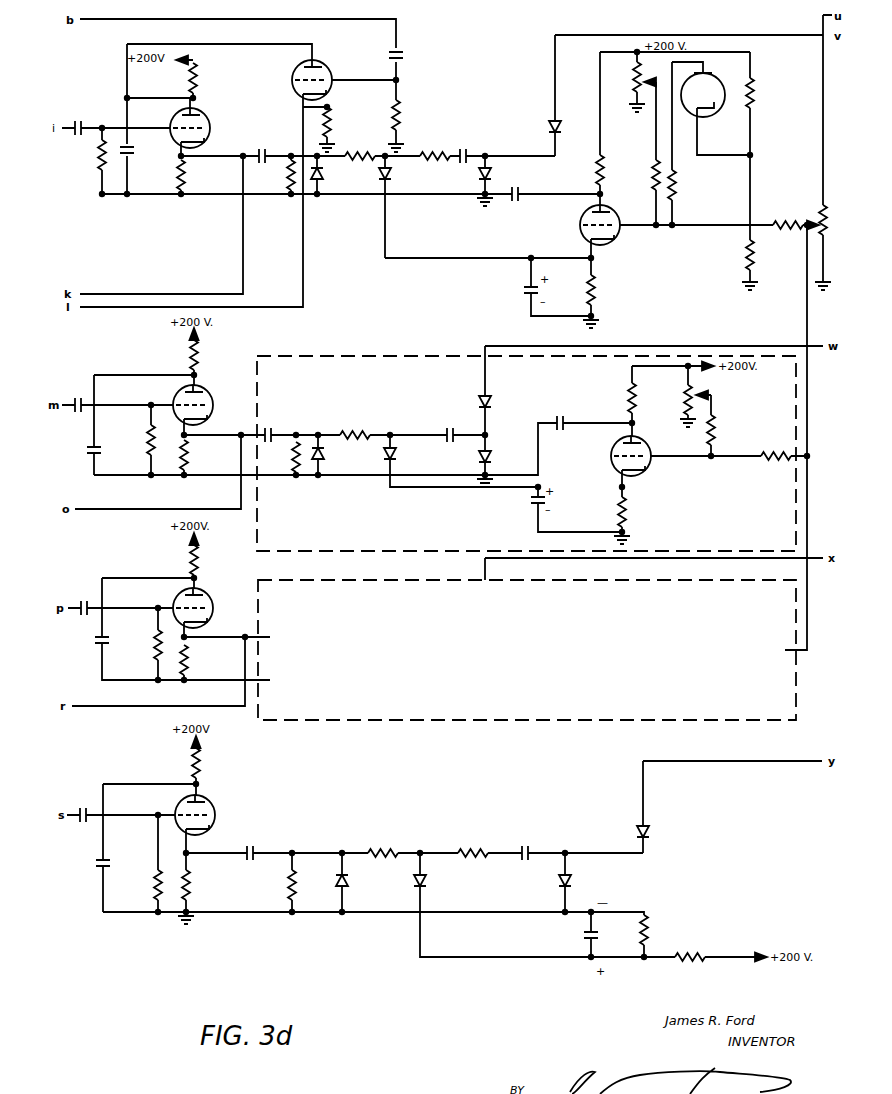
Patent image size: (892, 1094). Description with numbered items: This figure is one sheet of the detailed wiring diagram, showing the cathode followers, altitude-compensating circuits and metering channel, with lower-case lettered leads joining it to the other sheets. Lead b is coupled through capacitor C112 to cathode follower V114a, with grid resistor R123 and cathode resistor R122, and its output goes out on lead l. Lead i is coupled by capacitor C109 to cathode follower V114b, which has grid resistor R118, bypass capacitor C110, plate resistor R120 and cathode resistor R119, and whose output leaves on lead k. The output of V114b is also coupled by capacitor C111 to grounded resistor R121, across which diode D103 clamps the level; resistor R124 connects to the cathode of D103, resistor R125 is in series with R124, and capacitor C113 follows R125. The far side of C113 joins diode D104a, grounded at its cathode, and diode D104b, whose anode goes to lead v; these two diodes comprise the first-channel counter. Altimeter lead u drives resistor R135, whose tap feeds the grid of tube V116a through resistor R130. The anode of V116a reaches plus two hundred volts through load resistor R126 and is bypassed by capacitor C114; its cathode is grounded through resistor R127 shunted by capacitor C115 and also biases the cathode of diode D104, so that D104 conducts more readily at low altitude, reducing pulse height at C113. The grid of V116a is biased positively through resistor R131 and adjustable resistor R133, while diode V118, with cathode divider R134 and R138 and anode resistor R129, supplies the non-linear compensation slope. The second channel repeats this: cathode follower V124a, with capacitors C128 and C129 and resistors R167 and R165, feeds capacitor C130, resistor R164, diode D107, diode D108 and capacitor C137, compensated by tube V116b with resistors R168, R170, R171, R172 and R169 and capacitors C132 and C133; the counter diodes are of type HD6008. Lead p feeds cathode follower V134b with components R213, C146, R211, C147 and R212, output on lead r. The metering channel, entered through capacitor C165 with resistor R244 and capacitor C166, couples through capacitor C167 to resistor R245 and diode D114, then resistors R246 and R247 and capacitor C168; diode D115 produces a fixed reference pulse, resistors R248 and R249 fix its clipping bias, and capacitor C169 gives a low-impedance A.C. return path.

The coupling capacitor C109 is at (74, 116).
The grid resistor R118 is at (82, 158).
The bypass capacitor C110 is at (141, 155).
The plate resistor R120 is at (210, 78).
The cathode follower V114b is at (215, 128).
The cathode resistor R119 is at (199, 175).
The coupling capacitor C111 is at (267, 147).
The resistor R121 is at (271, 175).
The clamping diode D103 is at (331, 177).
The cathode follower V114a is at (328, 73).
The cathode resistor R122 is at (343, 116).
The coupling capacitor C112 is at (411, 52).
The grid resistor R123 is at (419, 112).
The resistor R124 is at (360, 154).
The resistor R125 is at (434, 154).
The capacitor C113 is at (466, 154).
The diode D104 is at (401, 177).
The diode D104a is at (510, 171).
The diode D104b is at (529, 124).
The bypass capacitor C114 is at (517, 208).
The capacitor C115 is at (511, 293).
The load resistor R126 is at (582, 170).
The resistor R131 is at (637, 172).
The adjustable resistor R133 is at (622, 85).
The diode V118 is at (713, 110).
The voltage divider resistor R138 is at (767, 93).
The resistor R129 is at (693, 185).
The resistor R135 is at (807, 211).
The resistor R130 is at (784, 240).
The voltage divider resistor R134 is at (732, 254).
The tube V116a is at (622, 235).
The cathode resistor R127 is at (610, 292).
The coupling capacitor C128 is at (74, 390).
The cathode follower V124a is at (173, 386).
The resistor R167 is at (238, 428).
The bypass capacitor C129 is at (80, 443).
The cathode resistor R165 is at (201, 455).
The coupling capacitor C130 is at (276, 421).
The resistor R164 is at (277, 457).
The clamping diode D107 is at (334, 454).
The diode D108 is at (406, 456).
The capacitor C137 is at (449, 421).
The diode HD6008 is at (591, 637).
The bypass capacitor C132 is at (560, 422).
The load resistor R168 is at (613, 397).
The adjustable resistor R170 is at (668, 402).
The resistor R171 is at (736, 426).
The tube V116b is at (603, 460).
The resistor R172 is at (770, 473).
The capacitor C133 is at (558, 510).
The cathode resistor R169 is at (640, 512).
The plate resistor R213 is at (174, 560).
The coupling capacitor C146 is at (77, 596).
The cathode follower V134b is at (158, 608).
The grid resistor R211 is at (140, 645).
The bypass capacitor C147 is at (87, 654).
The cathode resistor R212 is at (203, 660).
The plate resistor R244 is at (166, 824).
The coupling capacitor C165 is at (76, 801).
The bypass capacitor C166 is at (120, 863).
The coupling capacitor C167 is at (247, 841).
The resistor R245 is at (269, 885).
The resistor R246 is at (381, 837).
The resistor R247 is at (470, 837).
The capacitor C168 is at (519, 839).
The clamping diode D114 is at (359, 881).
The diode D115 is at (437, 881).
The capacitor C169 is at (571, 937).
The bias resistor R248 is at (663, 930).
The bias resistor R249 is at (688, 967).